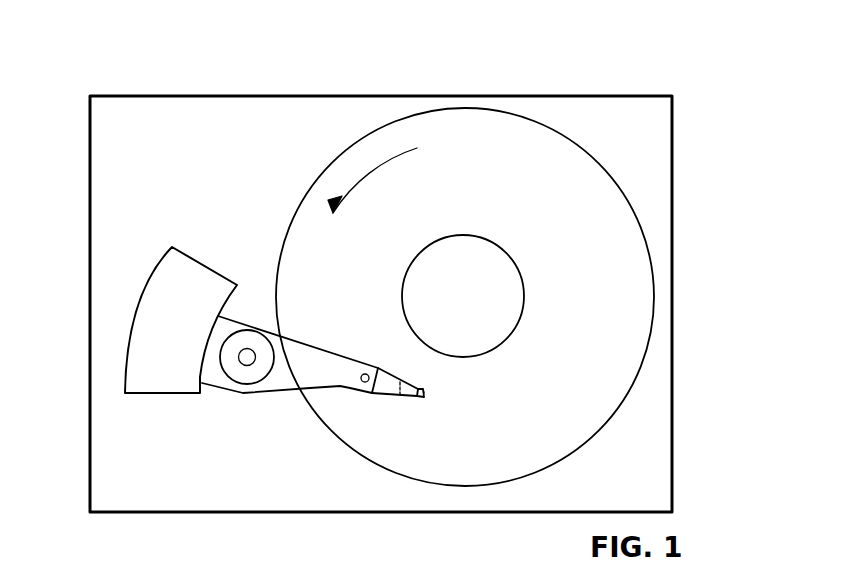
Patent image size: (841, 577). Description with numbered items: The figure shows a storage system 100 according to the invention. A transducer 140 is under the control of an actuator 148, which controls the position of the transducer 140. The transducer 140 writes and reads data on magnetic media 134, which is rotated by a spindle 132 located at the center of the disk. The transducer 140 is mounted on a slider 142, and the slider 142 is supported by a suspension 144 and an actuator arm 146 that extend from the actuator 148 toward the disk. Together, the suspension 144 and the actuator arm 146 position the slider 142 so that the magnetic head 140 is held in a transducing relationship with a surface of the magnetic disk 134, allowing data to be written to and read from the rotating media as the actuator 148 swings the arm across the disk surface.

The storage system 100 is at (690, 128).
The spindle 132 is at (498, 238).
The magnetic media 134 is at (597, 314).
The transducer 140 is at (424, 396).
The slider 142 is at (423, 389).
The suspension 144 is at (386, 396).
The actuator arm 146 is at (298, 342).
The actuator 148 is at (238, 358).